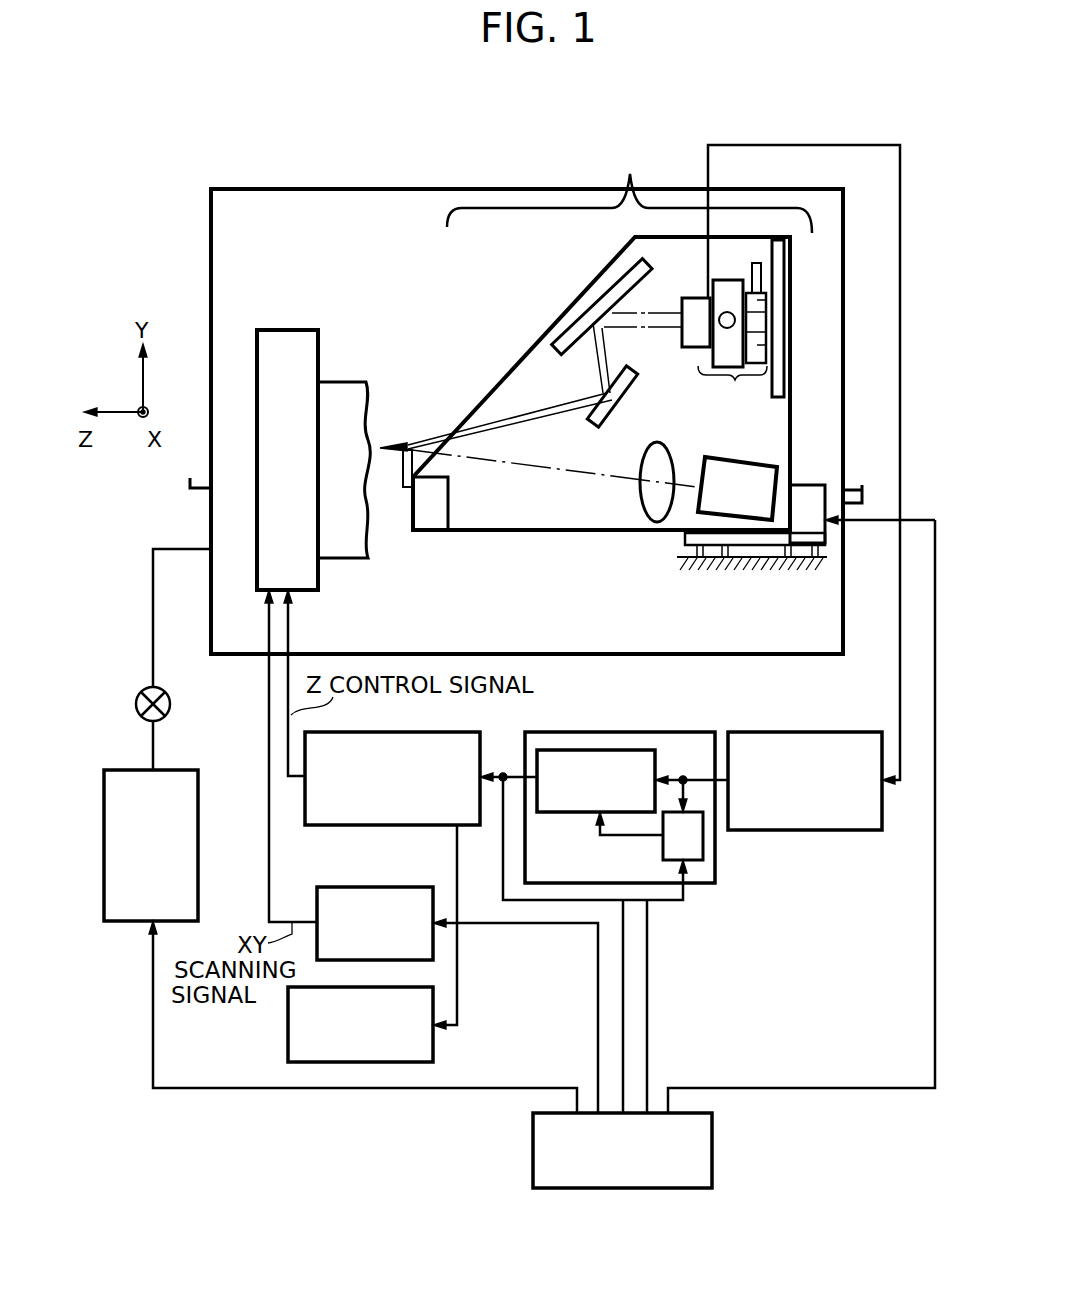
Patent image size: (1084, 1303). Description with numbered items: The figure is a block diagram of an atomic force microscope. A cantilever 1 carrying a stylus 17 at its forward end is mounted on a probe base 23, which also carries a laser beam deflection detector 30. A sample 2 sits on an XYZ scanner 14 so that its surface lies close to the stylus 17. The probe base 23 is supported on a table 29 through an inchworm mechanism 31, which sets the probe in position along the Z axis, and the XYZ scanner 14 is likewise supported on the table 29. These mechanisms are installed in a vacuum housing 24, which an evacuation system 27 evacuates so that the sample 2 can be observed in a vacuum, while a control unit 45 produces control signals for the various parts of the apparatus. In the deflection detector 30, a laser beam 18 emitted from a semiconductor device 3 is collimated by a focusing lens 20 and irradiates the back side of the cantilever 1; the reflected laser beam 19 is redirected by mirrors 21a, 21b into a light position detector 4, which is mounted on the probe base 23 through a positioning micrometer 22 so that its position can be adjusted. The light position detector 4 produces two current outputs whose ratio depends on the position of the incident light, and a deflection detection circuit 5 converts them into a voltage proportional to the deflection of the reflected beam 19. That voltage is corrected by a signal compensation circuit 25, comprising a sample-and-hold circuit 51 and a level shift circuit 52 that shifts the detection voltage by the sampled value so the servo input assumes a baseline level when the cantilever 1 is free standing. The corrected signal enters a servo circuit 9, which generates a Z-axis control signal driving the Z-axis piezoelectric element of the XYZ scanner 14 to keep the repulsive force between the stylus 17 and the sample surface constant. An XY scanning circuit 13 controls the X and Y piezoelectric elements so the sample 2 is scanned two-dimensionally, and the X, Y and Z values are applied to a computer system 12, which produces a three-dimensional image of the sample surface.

The cantilever 1 is at (393, 465).
The sample 2 is at (358, 560).
The semiconductor device 3 is at (750, 503).
The light position detector 4 is at (690, 298).
The deflection detection circuit 5 is at (838, 830).
The servo circuit 9 is at (308, 827).
The computer system 12 is at (435, 1047).
The XY scanning circuit 13 is at (407, 887).
The XYZ scanner 14 is at (281, 330).
The stylus 17 is at (395, 432).
The laser beam 18 is at (537, 470).
The reflected laser beam 19 is at (545, 408).
The focusing lens 20 is at (653, 506).
The mirror 21a is at (622, 408).
The mirror 21b is at (590, 303).
The positioning micrometer 22 is at (735, 380).
The probe base 23 is at (547, 532).
The vacuum housing 24 is at (350, 189).
The signal compensation circuit 25 is at (645, 732).
The evacuation system 27 is at (198, 888).
The table 29 is at (778, 562).
The laser beam deflection detector 30 is at (650, 167).
The inchworm mechanism 31 is at (800, 483).
The control unit 45 is at (712, 1136).
The sample-and-hold circuit 51 is at (704, 859).
The level shift circuit 52 is at (555, 812).